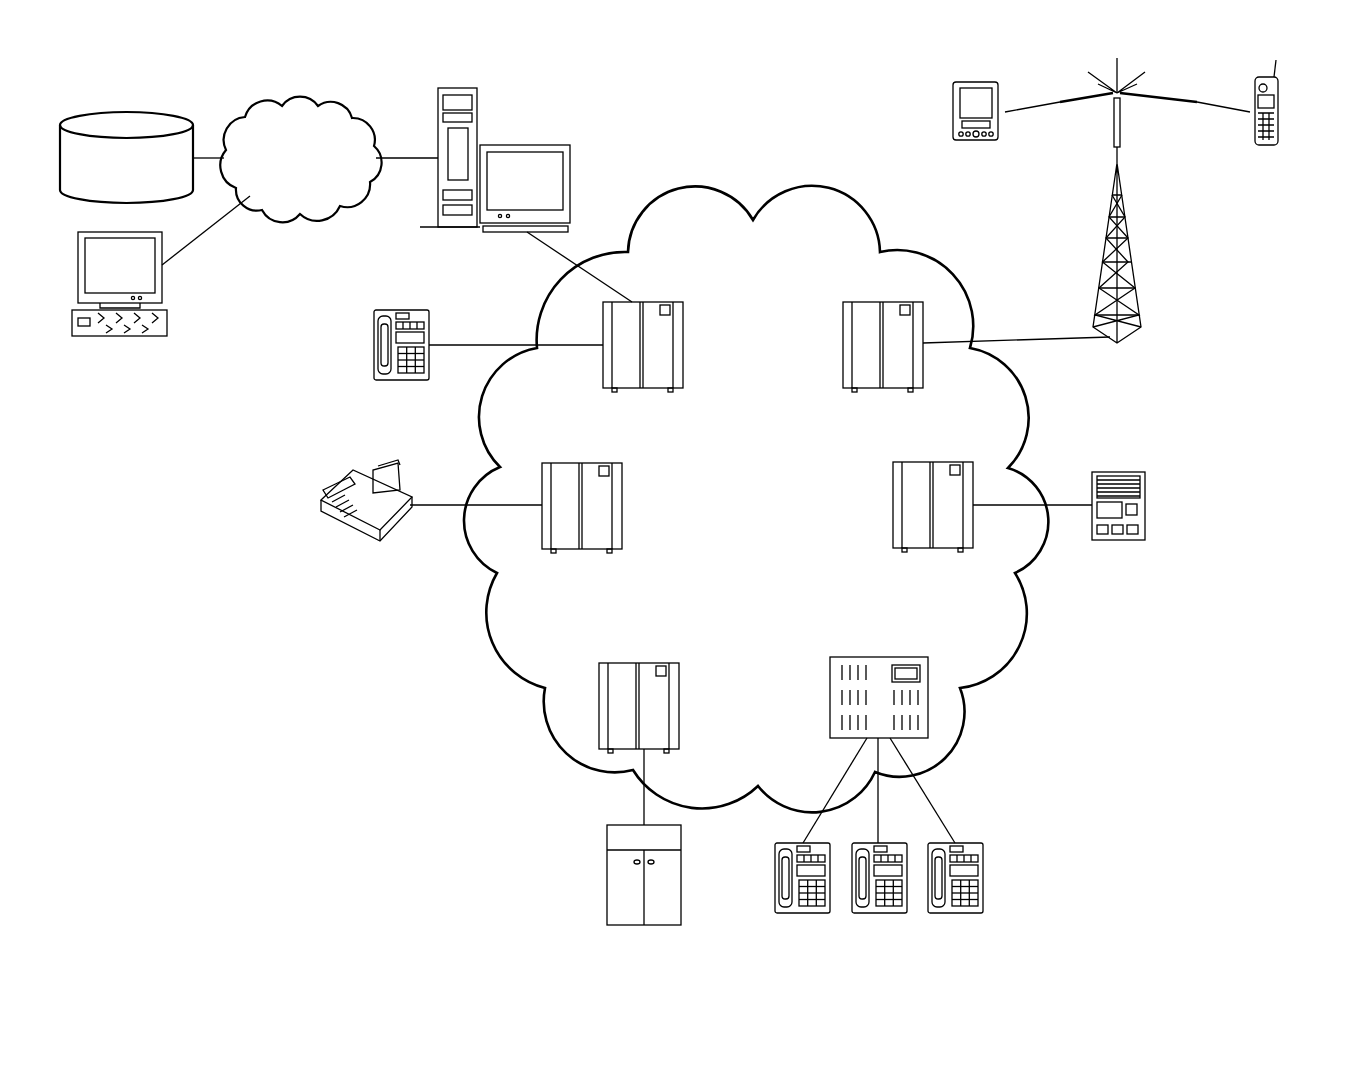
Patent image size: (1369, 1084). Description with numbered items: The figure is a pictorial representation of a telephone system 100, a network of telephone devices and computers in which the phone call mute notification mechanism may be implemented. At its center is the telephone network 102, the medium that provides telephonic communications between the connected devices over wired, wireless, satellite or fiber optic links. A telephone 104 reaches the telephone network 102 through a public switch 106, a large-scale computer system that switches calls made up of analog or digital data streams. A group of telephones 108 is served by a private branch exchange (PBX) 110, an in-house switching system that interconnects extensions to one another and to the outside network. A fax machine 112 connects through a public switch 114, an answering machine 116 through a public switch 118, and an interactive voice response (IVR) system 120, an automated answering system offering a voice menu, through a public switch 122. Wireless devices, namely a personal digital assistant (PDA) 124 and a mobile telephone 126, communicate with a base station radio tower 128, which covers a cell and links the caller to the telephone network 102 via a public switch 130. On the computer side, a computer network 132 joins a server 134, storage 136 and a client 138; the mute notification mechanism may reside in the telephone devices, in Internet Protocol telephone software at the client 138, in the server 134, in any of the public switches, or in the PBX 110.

The telephone system 100 is at (433, 695).
The telephone network 102 is at (1017, 658).
The telephone 104 is at (375, 352).
The public switch 106 is at (683, 334).
The telephones 108 is at (998, 838).
The private branch exchange (PBX) 110 is at (830, 700).
The fax machine 112 is at (350, 533).
The public switch 114 is at (620, 518).
The answering machine 116 is at (1145, 513).
The public switch 118 is at (893, 518).
The interactive voice response (IVR) system 120 is at (607, 881).
The public switch 122 is at (679, 696).
The personal digital assistant (PDA) 124 is at (953, 110).
The mobile telephone 126 is at (1280, 98).
The base station radio tower 128 is at (1133, 338).
The public switch 130 is at (843, 353).
The computer network 132 is at (327, 210).
The server 134 is at (572, 183).
The storage 136 is at (118, 122).
The client 138 is at (168, 326).